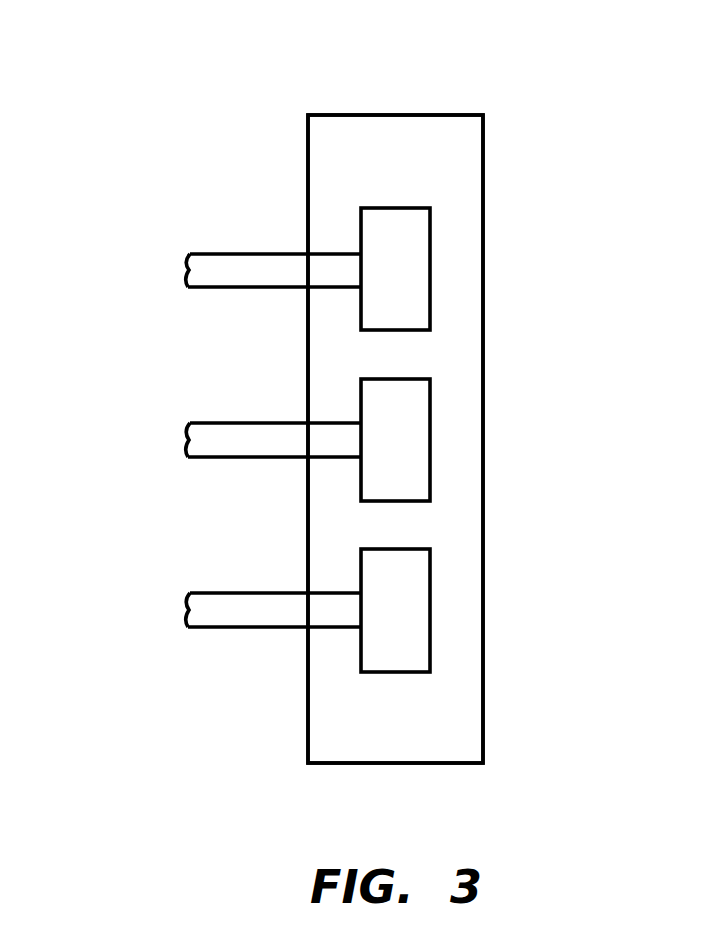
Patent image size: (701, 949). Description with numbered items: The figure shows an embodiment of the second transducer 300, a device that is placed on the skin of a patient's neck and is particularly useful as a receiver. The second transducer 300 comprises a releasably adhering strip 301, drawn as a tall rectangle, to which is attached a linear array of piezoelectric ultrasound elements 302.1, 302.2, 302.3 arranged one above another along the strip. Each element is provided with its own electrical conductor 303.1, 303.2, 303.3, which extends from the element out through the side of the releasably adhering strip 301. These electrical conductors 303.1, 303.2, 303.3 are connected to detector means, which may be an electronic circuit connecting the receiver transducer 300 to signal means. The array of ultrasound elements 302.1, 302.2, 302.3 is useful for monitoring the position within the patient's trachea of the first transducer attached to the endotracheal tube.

The second transducer 300 is at (244, 108).
The releasably adhering strip 301 is at (418, 164).
The piezoelectric ultrasound element 302.1 is at (405, 270).
The piezoelectric ultrasound element 302.2 is at (405, 441).
The piezoelectric ultrasound element 302.3 is at (405, 609).
The electrical conductor 303.1 is at (212, 270).
The electrical conductor 303.2 is at (212, 441).
The electrical conductor 303.3 is at (212, 610).